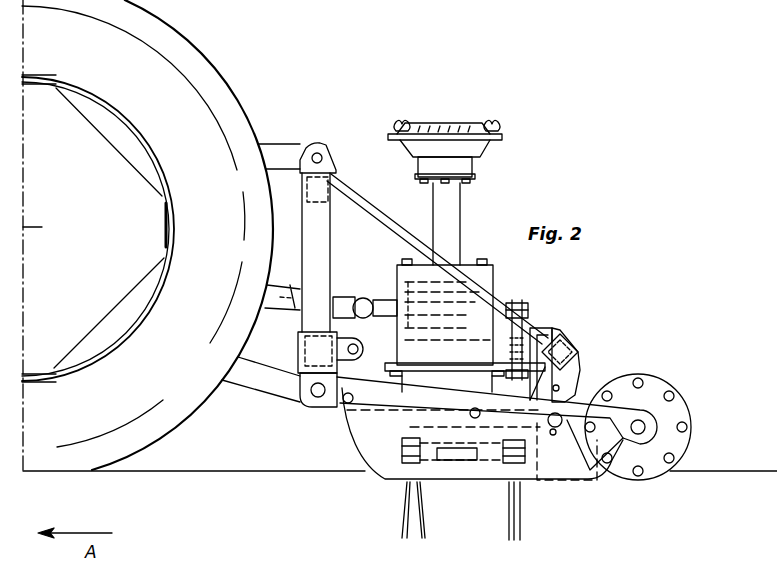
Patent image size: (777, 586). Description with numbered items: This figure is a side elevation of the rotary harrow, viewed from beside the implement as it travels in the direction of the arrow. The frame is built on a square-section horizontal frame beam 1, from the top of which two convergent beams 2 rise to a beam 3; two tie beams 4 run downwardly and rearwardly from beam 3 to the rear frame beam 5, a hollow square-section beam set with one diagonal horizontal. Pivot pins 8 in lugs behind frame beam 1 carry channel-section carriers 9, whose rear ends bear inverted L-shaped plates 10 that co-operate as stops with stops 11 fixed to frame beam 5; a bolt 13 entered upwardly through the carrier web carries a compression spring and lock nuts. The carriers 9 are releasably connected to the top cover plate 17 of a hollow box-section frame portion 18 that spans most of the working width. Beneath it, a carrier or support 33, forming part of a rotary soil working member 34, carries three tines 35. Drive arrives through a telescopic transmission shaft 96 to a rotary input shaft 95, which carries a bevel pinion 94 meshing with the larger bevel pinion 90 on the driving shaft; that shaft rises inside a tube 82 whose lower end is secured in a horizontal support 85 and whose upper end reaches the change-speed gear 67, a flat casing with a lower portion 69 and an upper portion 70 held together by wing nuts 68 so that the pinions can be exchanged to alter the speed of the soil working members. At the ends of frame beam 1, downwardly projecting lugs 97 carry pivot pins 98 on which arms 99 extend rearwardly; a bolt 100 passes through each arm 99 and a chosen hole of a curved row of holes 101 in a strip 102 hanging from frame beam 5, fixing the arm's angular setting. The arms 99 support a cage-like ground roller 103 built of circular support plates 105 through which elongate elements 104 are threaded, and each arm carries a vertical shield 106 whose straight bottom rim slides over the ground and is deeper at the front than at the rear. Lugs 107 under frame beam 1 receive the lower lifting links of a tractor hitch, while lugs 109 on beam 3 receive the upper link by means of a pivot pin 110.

The frame beam 1 is at (298, 346).
The beams 2 is at (302, 232).
The beam 3 is at (307, 193).
The tie beams 4 is at (372, 200).
The frame beam 5 is at (581, 349).
The pivot pins 8 is at (360, 349).
The carriers 9 is at (447, 329).
The plate 10 is at (548, 330).
The stop 11 is at (575, 340).
The bolt 13 is at (526, 306).
The top cover plate 17 is at (465, 365).
The frame portion 18 is at (405, 419).
The carrier or support 33 is at (490, 465).
The rotary soil working member 34 is at (468, 520).
The tines 35 is at (422, 540).
The change-speed gear 67 is at (442, 124).
The wing nuts 68 is at (394, 126).
The lower portion 69 is at (414, 150).
The upper portion 70 is at (472, 124).
The tube 82 is at (462, 210).
The support 85 is at (483, 264).
The bevel pinion 90 is at (398, 272).
The bevel pinion 94 is at (500, 300).
The rotary input shaft 95 is at (388, 292).
The telescopic transmission shaft 96 is at (266, 294).
The lugs 97 is at (300, 386).
The pivot pins 98 is at (318, 398).
The arms 99 is at (344, 405).
The bolt 100 is at (585, 441).
The holes 101 is at (562, 390).
The strips 102 is at (590, 470).
The ground roller 103 is at (672, 382).
The elongate elements 104 is at (664, 480).
The support plates 105 is at (626, 480).
The shield 106 is at (383, 478).
The lugs 107 is at (312, 402).
The lugs 109 is at (305, 150).
The pivot pin 110 is at (318, 150).